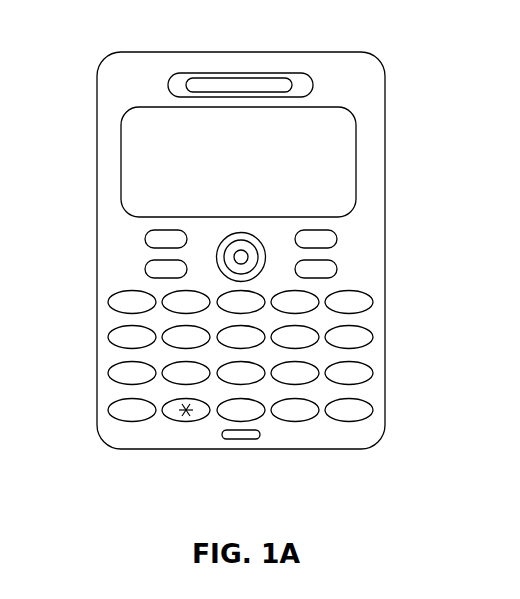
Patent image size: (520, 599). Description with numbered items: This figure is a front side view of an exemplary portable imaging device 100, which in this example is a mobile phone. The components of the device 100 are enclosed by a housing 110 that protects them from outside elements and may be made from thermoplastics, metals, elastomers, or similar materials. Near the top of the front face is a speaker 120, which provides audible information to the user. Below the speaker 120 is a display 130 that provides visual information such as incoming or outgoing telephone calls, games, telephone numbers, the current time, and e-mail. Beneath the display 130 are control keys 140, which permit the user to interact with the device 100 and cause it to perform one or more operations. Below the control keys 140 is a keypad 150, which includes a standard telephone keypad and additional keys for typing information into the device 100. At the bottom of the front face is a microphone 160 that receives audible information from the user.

The portable imaging device 100 is at (86, 49).
The housing 110 is at (97, 233).
The speaker 120 is at (235, 73).
The display 130 is at (356, 144).
The control keys 140 is at (348, 223).
The keypad 150 is at (360, 433).
The microphone 160 is at (242, 440).